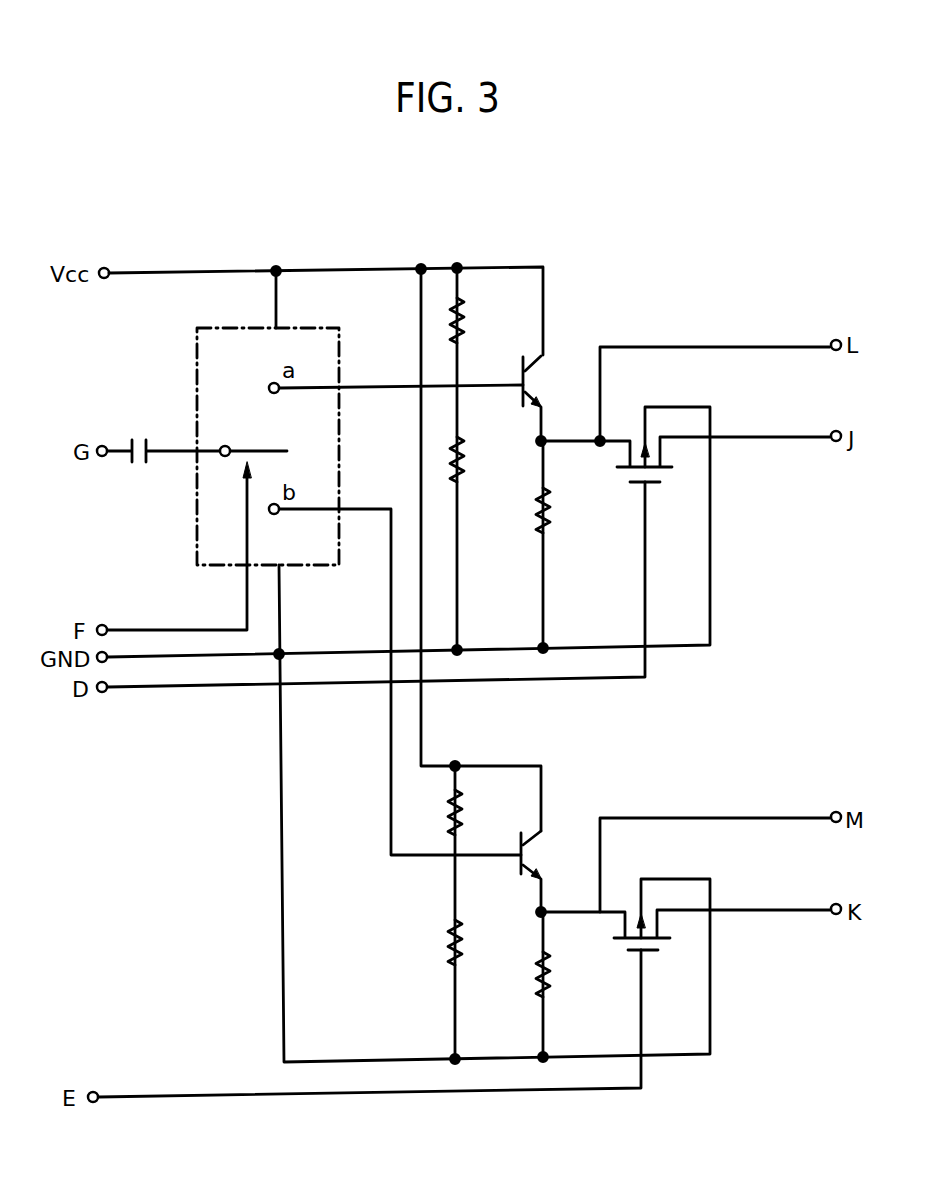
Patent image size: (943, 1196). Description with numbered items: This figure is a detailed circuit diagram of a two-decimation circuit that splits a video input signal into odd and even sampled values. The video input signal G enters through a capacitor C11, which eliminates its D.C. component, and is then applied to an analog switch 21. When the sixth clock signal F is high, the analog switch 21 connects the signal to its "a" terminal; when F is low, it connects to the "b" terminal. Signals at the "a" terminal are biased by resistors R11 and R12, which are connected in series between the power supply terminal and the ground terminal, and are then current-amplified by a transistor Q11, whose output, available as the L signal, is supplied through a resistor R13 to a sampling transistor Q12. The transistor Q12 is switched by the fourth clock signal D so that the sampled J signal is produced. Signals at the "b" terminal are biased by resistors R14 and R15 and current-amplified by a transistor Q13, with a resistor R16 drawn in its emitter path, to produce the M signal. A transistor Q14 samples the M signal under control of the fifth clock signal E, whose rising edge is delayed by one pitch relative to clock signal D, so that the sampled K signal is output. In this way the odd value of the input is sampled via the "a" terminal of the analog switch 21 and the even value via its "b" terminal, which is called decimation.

The analog switch 21 is at (197, 373).
The capacitor C11 is at (163, 469).
The resistor R11 is at (480, 320).
The resistor R12 is at (480, 459).
The resistor R13 is at (568, 545).
The resistor R14 is at (479, 912).
The resistor R15 is at (479, 942).
The resistor R16 is at (568, 984).
The transistor Q11 is at (556, 398).
The sampling transistor Q12 is at (685, 469).
The transistor Q13 is at (555, 871).
The transistor Q14 is at (685, 941).